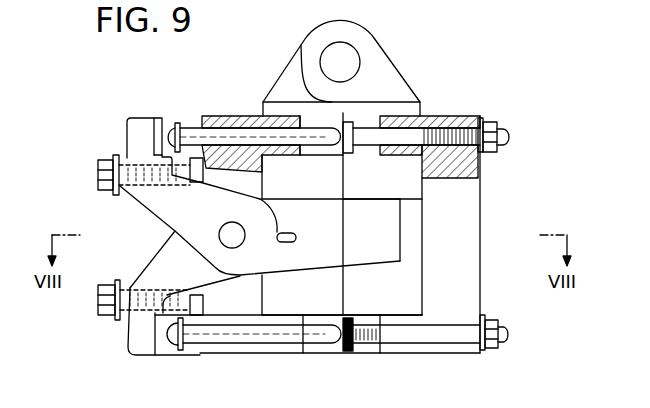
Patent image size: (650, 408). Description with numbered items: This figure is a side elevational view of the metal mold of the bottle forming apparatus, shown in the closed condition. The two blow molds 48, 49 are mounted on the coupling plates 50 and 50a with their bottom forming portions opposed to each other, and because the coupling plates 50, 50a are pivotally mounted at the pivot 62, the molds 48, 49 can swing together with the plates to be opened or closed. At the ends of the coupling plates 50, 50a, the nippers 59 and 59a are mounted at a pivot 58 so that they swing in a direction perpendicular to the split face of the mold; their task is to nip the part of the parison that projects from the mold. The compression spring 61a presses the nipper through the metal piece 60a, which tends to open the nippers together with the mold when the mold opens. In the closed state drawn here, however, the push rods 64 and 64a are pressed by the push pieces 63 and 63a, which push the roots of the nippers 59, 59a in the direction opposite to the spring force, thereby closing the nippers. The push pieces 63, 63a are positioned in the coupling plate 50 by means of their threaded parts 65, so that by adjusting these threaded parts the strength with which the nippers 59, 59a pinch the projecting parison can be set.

The metal mold 48 is at (405, 300).
The metal mold 49 is at (285, 302).
The coupling plate 50 is at (468, 288).
The coupling plate 50a is at (233, 345).
The pivot 58 is at (240, 238).
The nipper 59 is at (377, 262).
The nipper 59a is at (392, 222).
The metal piece 60a is at (168, 347).
The compression spring 61a is at (125, 312).
The pivot 62 is at (347, 70).
The push piece 63 is at (391, 135).
The push piece 63a is at (368, 338).
The push rod 64 is at (229, 137).
The push rod 64a is at (322, 337).
The threaded part 65 is at (442, 145).